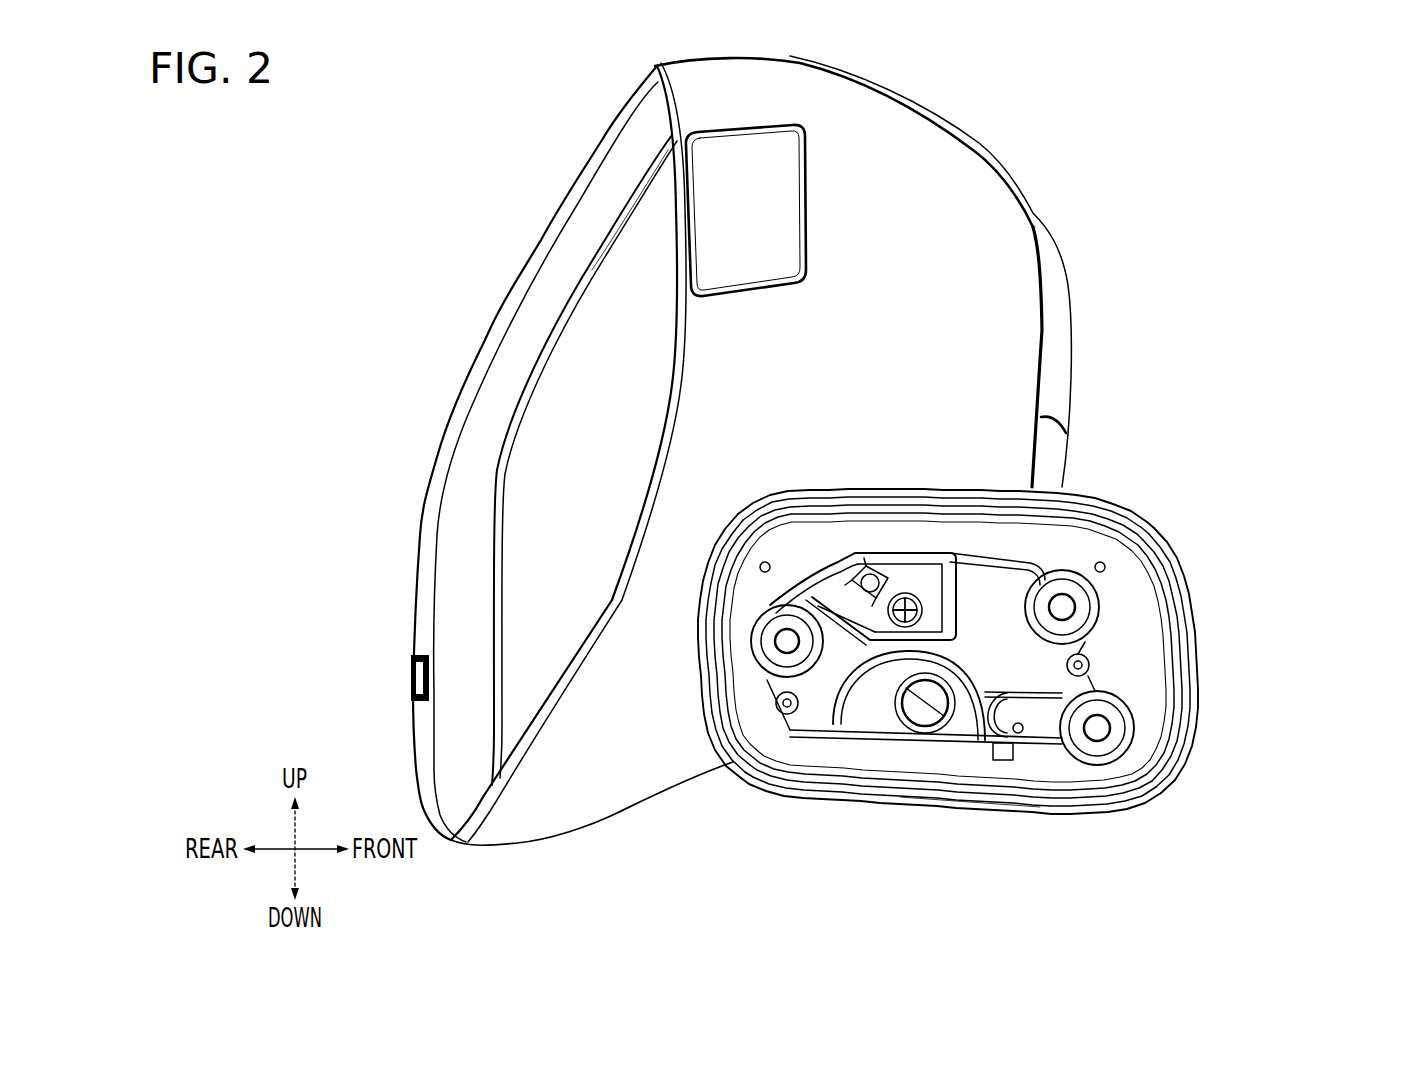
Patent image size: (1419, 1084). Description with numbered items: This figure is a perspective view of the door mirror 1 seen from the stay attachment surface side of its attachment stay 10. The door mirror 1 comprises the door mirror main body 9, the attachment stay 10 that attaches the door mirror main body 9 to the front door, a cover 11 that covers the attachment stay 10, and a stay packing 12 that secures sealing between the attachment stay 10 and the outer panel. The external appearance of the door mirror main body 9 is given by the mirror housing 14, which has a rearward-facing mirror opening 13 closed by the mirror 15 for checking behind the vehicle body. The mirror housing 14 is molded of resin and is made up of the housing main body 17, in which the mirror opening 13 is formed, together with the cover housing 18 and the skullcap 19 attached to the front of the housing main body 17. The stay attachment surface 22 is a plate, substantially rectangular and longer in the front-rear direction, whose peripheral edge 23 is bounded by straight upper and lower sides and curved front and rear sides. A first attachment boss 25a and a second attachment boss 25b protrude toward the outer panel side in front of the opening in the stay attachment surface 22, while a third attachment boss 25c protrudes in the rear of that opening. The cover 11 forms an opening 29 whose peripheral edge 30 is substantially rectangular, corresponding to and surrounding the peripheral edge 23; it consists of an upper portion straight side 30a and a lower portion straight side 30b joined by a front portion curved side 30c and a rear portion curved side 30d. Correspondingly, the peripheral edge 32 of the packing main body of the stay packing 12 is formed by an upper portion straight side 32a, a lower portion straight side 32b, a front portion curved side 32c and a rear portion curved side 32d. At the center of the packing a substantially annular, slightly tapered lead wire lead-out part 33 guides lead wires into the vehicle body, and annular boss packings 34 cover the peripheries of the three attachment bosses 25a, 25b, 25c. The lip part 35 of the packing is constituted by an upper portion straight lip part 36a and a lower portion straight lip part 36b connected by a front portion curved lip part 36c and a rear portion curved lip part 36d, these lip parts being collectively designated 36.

The door mirror 1 is at (1087, 155).
The door mirror main body 9 is at (975, 142).
The attachment stay 10 is at (1097, 592).
The cover 11 is at (928, 810).
The stay packing 12 is at (1180, 715).
The mirror opening 13 is at (458, 572).
The mirror housing 14 is at (902, 138).
The mirror 15 is at (628, 283).
The housing main body 17 is at (975, 232).
The cover housing 18 is at (1053, 463).
The skullcap 19 is at (1068, 272).
The stay attachment surface 22 is at (1140, 507).
The peripheral edge 23 is at (1153, 541).
The first attachment boss 25a is at (1083, 607).
The second attachment boss 25b is at (1110, 740).
The third attachment boss 25c is at (812, 665).
The opening 29 is at (963, 790).
The peripheral edge 30 is at (1011, 663).
The upper portion straight side 30a is at (947, 485).
The lower portion straight side 30b is at (993, 800).
The front portion curved side 30c is at (1193, 657).
The rear portion curved side 30d is at (712, 703).
The peripheral edge 32 is at (985, 628).
The upper portion straight side 32a is at (907, 495).
The lower portion straight side 32b is at (1033, 800).
The front portion curved side 32c is at (1190, 690).
The rear portion curved side 32d is at (707, 653).
The lead wire lead-out part 33 is at (897, 727).
The boss packings 34 is at (1073, 573).
The lip part 35 is at (858, 665).
The fourth rib 36 is at (1238, 660).
The upper portion straight lip part 36a is at (977, 505).
The lower portion straight lip part 36b is at (1010, 792).
The front portion curved lip part 36c is at (1190, 618).
The rear portion curved lip part 36d is at (722, 628).